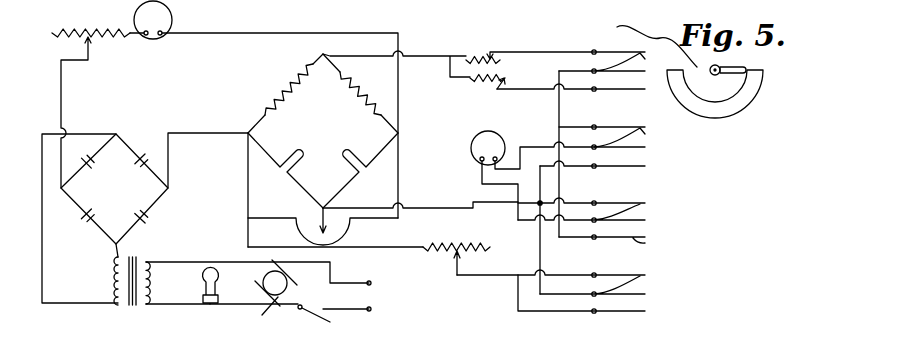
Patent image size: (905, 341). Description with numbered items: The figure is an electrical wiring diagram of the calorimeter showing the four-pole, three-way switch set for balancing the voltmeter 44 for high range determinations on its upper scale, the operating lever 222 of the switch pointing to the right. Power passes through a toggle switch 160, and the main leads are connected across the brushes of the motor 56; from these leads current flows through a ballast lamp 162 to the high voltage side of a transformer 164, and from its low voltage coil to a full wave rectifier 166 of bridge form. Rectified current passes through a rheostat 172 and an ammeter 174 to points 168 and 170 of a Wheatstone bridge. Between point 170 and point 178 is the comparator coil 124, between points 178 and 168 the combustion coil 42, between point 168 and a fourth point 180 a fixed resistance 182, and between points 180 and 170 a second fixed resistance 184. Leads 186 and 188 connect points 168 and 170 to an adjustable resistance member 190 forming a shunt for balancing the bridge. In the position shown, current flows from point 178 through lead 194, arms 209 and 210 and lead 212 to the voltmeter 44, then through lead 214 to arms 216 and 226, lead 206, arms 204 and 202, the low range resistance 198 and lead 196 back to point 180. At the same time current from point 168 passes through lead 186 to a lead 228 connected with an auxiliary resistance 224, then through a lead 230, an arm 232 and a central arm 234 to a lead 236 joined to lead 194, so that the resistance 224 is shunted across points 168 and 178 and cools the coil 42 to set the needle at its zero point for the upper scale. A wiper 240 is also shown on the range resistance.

The combustion coil 42 is at (292, 152).
The voltmeter 44 is at (488, 142).
The motor 56 is at (275, 299).
The comparator coil 124 is at (355, 151).
The toggle switch 160 is at (315, 314).
The ballast lamp 162 is at (205, 280).
The transformer 164 is at (140, 258).
The full wave rectifier 166 is at (107, 228).
The point of the Wheatstone bridge 168 is at (247, 131).
The point of the Wheatstone bridge 170 is at (399, 131).
The rheostat 172 is at (98, 41).
The ammeter 174 is at (172, 20).
The point of the Wheatstone bridge 178 is at (324, 201).
The point of the Wheatstone bridge 180 is at (317, 56).
The fixed resistance 182 is at (293, 84).
The second fixed resistance 184 is at (367, 98).
The lead 186 is at (247, 187).
The lead 188 is at (400, 163).
The adjustable resistance member 190 is at (318, 218).
The lead 194 is at (435, 201).
The lead 196 is at (410, 55).
The low range resistance 198 is at (473, 57).
The arm of the 3-way switch 202 is at (610, 52).
The central arm of the 3-way switch 204 is at (631, 62).
The lead 206 is at (559, 110).
The arm of the 3-way switch 209 is at (627, 200).
The central arm of the 3-way switch 210 is at (634, 212).
The lead 212 is at (515, 191).
The lead 214 is at (532, 147).
The central arm of the 3-way switch 216 is at (636, 134).
The operating lever of the 3-way switch 222 is at (742, 70).
The auxiliary resistance 224 is at (455, 262).
The arm of the 3-way switch 226 is at (615, 126).
The lead 228 is at (363, 250).
The lead 230 is at (500, 278).
The arm of the 3-way switch 232 is at (627, 275).
The central arm of the 3-way switch 234 is at (629, 283).
The lead 236 is at (540, 258).
The wiper 240 is at (505, 78).